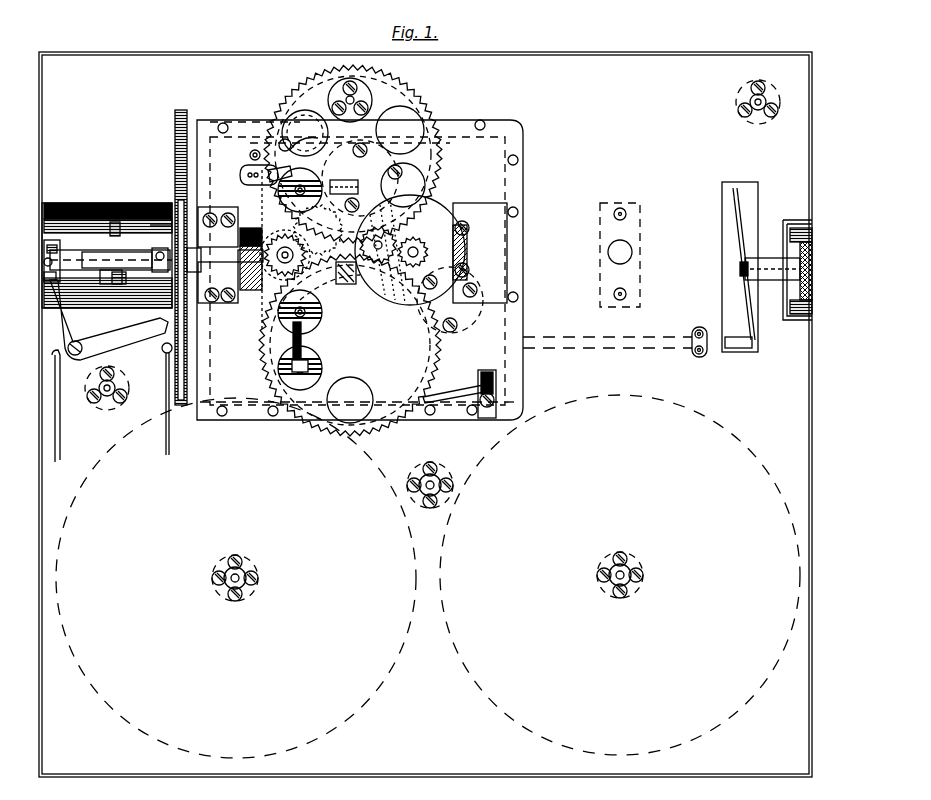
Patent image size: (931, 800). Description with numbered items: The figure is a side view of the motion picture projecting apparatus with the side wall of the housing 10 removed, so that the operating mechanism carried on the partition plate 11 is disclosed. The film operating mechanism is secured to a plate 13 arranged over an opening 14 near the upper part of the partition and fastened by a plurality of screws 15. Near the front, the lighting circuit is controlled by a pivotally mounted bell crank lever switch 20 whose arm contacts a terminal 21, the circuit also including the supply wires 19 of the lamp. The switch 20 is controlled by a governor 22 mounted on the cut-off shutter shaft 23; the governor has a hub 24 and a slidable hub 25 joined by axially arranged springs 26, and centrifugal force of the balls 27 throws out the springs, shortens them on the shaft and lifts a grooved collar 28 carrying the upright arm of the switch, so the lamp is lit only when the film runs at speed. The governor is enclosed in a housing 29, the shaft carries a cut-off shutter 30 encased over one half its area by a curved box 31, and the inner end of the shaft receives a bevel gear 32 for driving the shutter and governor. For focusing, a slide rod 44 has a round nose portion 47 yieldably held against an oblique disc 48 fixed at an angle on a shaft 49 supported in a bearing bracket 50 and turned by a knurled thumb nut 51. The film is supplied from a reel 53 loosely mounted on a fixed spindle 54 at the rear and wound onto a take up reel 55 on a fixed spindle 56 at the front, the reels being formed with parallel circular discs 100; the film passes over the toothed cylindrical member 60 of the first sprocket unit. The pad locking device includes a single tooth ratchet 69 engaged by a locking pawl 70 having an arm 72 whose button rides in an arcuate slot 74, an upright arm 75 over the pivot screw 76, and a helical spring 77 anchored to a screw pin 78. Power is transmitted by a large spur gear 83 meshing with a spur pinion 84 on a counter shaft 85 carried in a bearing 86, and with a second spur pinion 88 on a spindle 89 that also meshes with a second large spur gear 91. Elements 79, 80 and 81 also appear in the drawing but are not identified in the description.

The housing 10 is at (130, 54).
The partition plate 11 is at (618, 89).
The plate 13 is at (520, 182).
The opening 14 is at (457, 132).
The screws 15 is at (224, 124).
The supply wires 19 is at (84, 388).
The bell crank lever switch 20 is at (112, 336).
The terminal 21 is at (162, 349).
The governor 22 is at (111, 268).
The cut-off shutter shaft 23 is at (102, 270).
The hub 24 is at (200, 243).
The slidable hub 25 is at (44, 251).
The springs 26 is at (124, 230).
The balls 27 is at (88, 214).
The grooved collar 28 is at (45, 270).
The governor housing 29 is at (162, 212).
The cut-off shutter 30 is at (176, 165).
The curved box 31 is at (175, 121).
The bevel gear 32 is at (262, 226).
The slide rod 44 is at (722, 335).
The round nose portion 47 is at (745, 352).
The oblique disc 48 is at (734, 252).
The shaft 49 is at (740, 272).
The bearing bracket 50 is at (763, 260).
The knurled thumb nut 51 is at (805, 302).
The reel 53 is at (750, 450).
The fixed spindle 54 is at (638, 581).
The take up reel 55 is at (383, 461).
The fixed spindle 56 is at (250, 586).
The cylindrical member 60 is at (400, 180).
The single tooth ratchet 69 is at (301, 190).
The locking pawl 70 is at (248, 164).
The arm 72 is at (245, 172).
The arcuate slot 74 is at (250, 182).
The upright arm 75 is at (256, 150).
The pivot screw 76 is at (287, 148).
The helical spring 77 is at (300, 134).
The screw pin 78 is at (336, 239).
The gear 79 is at (318, 230).
The block 80 is at (344, 178).
The gear 81 is at (391, 244).
The large spur gear 83 is at (306, 424).
The spur pinion 84 is at (330, 286).
The counter shaft 85 is at (276, 266).
The bearing 86 is at (353, 274).
The second spur pinion 88 is at (417, 246).
The spindle 89 is at (455, 252).
The second large spur gear 91 is at (412, 92).
The circular discs 100 is at (381, 672).